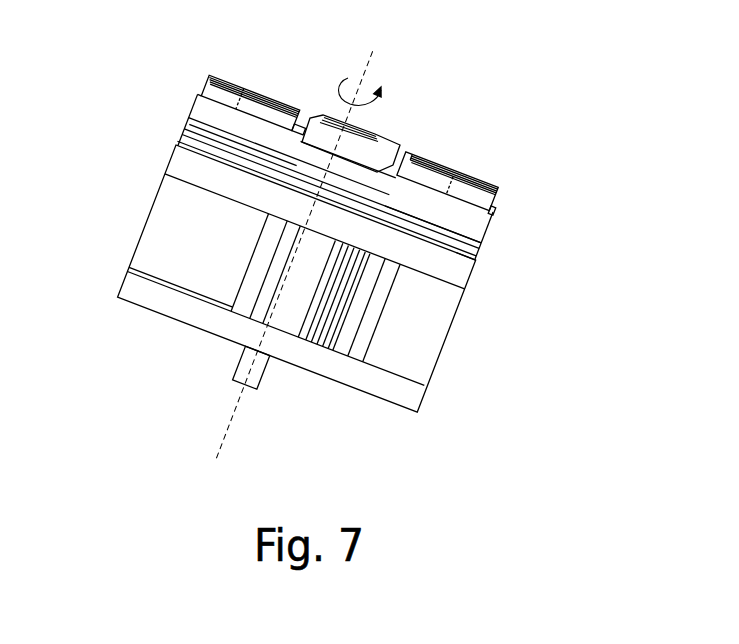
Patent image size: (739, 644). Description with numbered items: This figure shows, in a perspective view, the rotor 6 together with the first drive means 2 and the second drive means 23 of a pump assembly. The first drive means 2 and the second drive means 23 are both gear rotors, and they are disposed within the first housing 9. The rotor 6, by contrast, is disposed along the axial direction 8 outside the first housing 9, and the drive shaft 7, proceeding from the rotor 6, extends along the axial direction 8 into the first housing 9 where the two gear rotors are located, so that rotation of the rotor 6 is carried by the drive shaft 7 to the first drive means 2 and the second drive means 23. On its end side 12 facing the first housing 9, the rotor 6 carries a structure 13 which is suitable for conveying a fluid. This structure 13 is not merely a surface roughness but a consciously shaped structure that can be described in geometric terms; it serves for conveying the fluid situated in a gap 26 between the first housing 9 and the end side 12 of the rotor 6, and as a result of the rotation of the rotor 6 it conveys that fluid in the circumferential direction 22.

The first drive means 2 is at (255, 263).
The rotor 6 is at (480, 182).
The drive shaft 7 is at (368, 127).
The axial direction 8 is at (376, 42).
The first housing 9 is at (464, 280).
The end side 12 is at (186, 141).
The structure 13 is at (473, 246).
The circumferential direction 22 is at (376, 96).
The second drive means 23 is at (410, 360).
The gap 26 is at (472, 253).